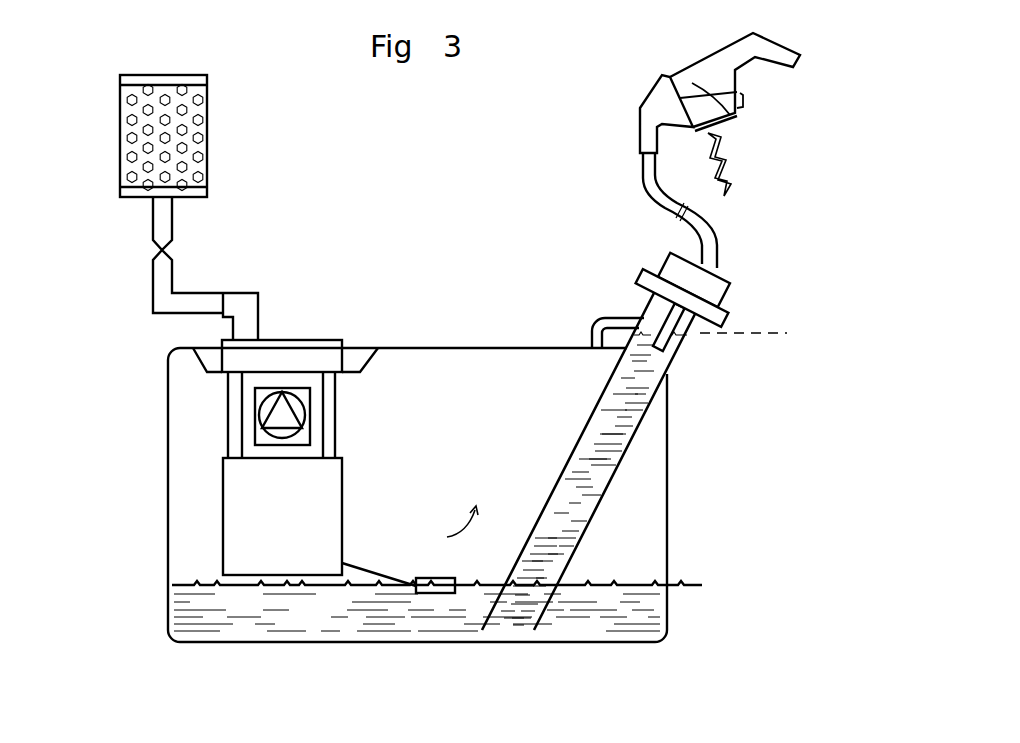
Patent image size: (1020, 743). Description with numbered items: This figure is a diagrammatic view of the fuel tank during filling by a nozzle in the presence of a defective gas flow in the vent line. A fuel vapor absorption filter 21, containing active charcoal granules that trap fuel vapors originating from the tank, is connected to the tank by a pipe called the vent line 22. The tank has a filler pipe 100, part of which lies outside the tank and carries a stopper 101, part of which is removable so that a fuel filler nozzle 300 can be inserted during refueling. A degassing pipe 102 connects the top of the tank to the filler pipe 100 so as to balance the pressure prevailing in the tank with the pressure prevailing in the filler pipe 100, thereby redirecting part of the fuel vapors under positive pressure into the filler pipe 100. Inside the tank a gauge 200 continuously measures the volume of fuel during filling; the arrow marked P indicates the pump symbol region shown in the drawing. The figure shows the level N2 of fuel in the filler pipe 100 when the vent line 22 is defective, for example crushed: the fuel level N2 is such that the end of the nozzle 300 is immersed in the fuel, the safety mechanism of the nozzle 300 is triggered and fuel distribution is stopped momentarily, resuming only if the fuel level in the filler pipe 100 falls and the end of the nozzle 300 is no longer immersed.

The fuel vapor absorption filter 21 is at (145, 142).
The vent line 22 is at (213, 298).
The filler pipe 100 is at (680, 355).
The stopper 101 is at (730, 283).
The degassing pipe 102 is at (604, 318).
The gauge 200 is at (437, 583).
The fuel filler nozzle 300 is at (720, 115).
The fuel level N2 is at (730, 335).
The pump flow direction P is at (461, 516).